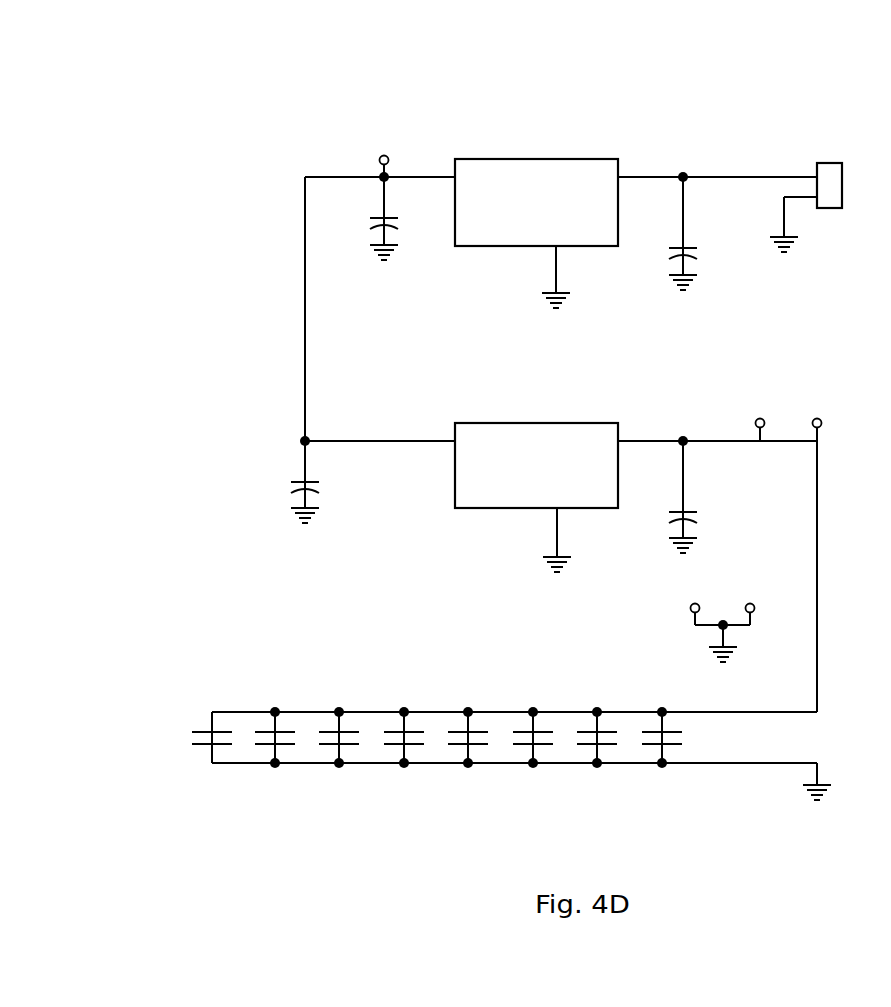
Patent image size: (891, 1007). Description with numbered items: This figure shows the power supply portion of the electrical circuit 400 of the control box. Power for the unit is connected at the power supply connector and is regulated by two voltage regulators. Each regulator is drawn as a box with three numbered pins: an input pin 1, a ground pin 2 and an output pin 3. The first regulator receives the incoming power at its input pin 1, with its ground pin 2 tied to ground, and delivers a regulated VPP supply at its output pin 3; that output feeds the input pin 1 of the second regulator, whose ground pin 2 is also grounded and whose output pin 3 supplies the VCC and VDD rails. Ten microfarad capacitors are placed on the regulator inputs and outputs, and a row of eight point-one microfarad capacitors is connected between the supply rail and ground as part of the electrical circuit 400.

The electrical circuit 400 is at (187, 138).
The voltage regulator input pin 1 is at (494, 297).
The voltage regulator ground pin 2 is at (559, 409).
The voltage regulator output pin 3 is at (533, 297).